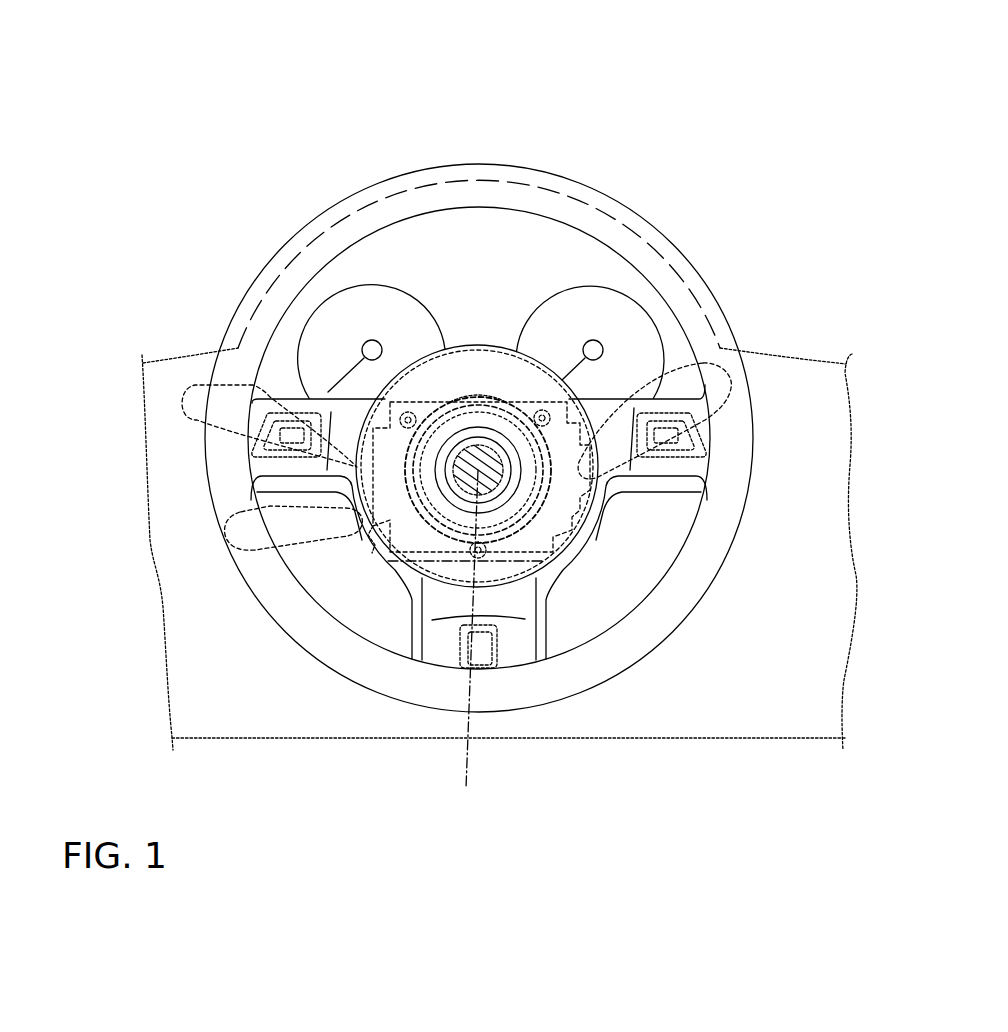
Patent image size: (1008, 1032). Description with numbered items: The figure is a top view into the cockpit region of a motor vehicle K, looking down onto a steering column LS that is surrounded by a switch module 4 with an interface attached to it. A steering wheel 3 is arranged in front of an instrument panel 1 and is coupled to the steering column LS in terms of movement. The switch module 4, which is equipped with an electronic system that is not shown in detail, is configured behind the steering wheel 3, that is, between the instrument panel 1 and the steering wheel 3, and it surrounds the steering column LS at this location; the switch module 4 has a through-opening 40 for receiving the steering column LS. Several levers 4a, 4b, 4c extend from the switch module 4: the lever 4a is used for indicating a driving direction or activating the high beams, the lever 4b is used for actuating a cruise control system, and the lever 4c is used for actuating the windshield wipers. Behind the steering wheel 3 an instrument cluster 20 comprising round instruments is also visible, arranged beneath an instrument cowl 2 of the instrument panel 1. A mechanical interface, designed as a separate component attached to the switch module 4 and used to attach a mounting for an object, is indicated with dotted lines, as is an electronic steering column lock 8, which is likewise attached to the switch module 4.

The instrument panel 1 is at (770, 350).
The instrument cowl 2 is at (328, 230).
The steering wheel 3 is at (272, 260).
The instrument cluster 20 is at (516, 248).
The through-opening 40 is at (478, 470).
The electronic steering column lock 8 is at (508, 561).
The steering column LS is at (465, 643).
The switch module 4 is at (372, 553).
The lever 4a is at (197, 420).
The lever 4b is at (248, 550).
The lever 4c is at (728, 388).
The motor vehicle K is at (718, 110).